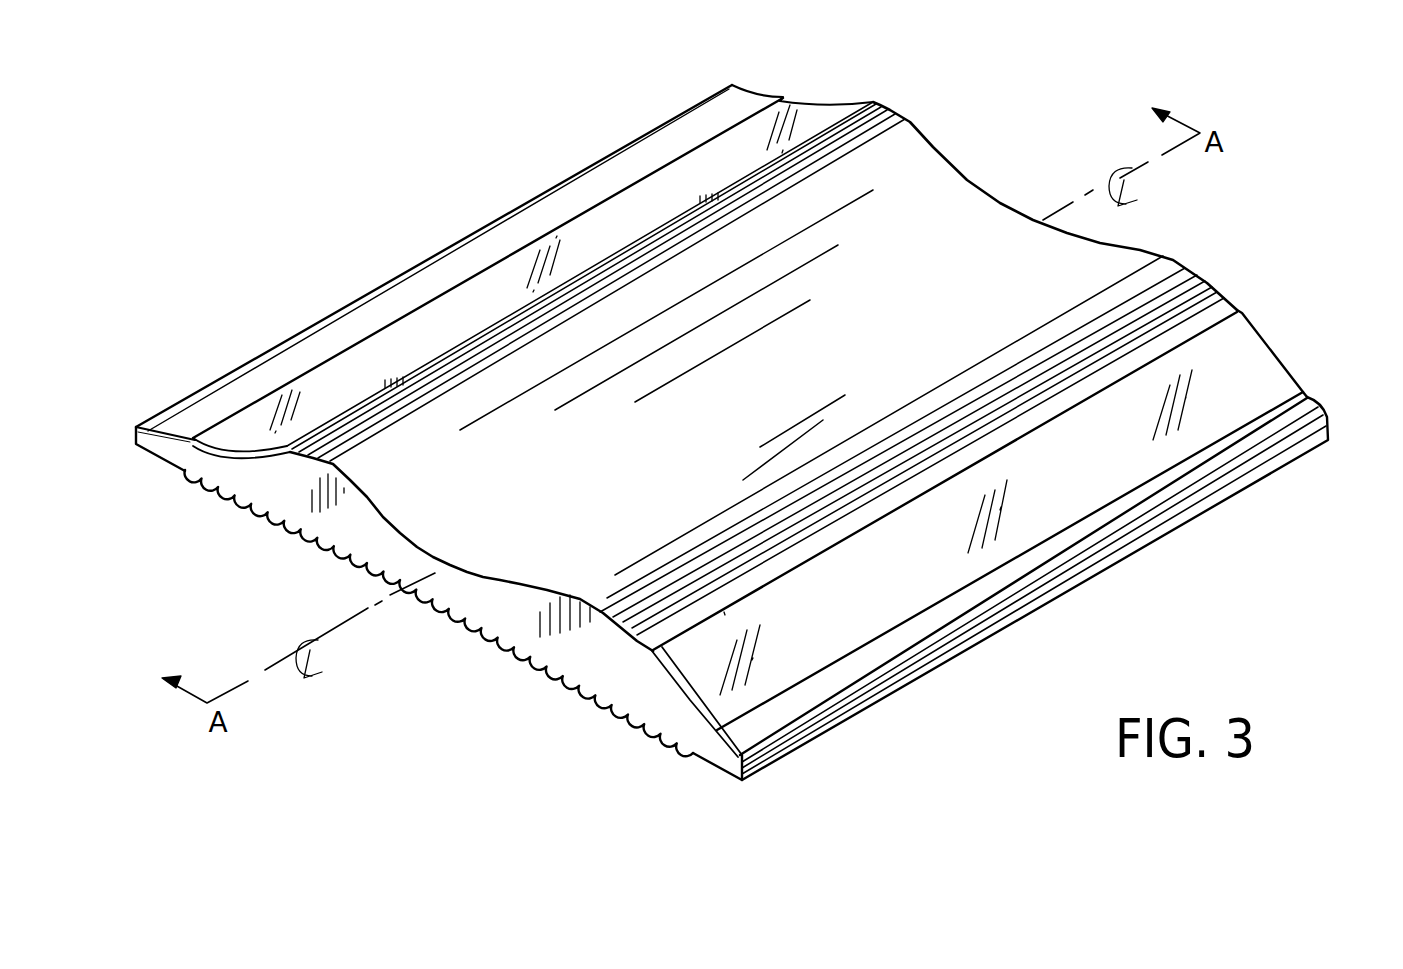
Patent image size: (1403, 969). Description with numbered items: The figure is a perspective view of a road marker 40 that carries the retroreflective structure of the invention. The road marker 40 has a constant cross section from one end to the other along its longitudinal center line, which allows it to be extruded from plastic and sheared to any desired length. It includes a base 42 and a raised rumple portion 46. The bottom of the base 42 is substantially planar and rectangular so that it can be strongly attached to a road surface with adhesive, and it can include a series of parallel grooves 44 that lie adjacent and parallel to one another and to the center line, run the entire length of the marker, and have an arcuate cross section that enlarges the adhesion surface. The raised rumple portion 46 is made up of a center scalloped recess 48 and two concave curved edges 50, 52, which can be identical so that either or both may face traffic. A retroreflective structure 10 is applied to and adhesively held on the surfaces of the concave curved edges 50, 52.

The retroreflective structure 10 is at (683, 188).
The road marker 40 is at (1263, 492).
The base 42 is at (478, 637).
The parallel grooves 44 is at (305, 533).
The raised rumple portion 46 is at (893, 112).
The center scalloped recess 48 is at (977, 225).
The concave curved edge 50 is at (680, 702).
The concave curved edge 52 is at (227, 453).